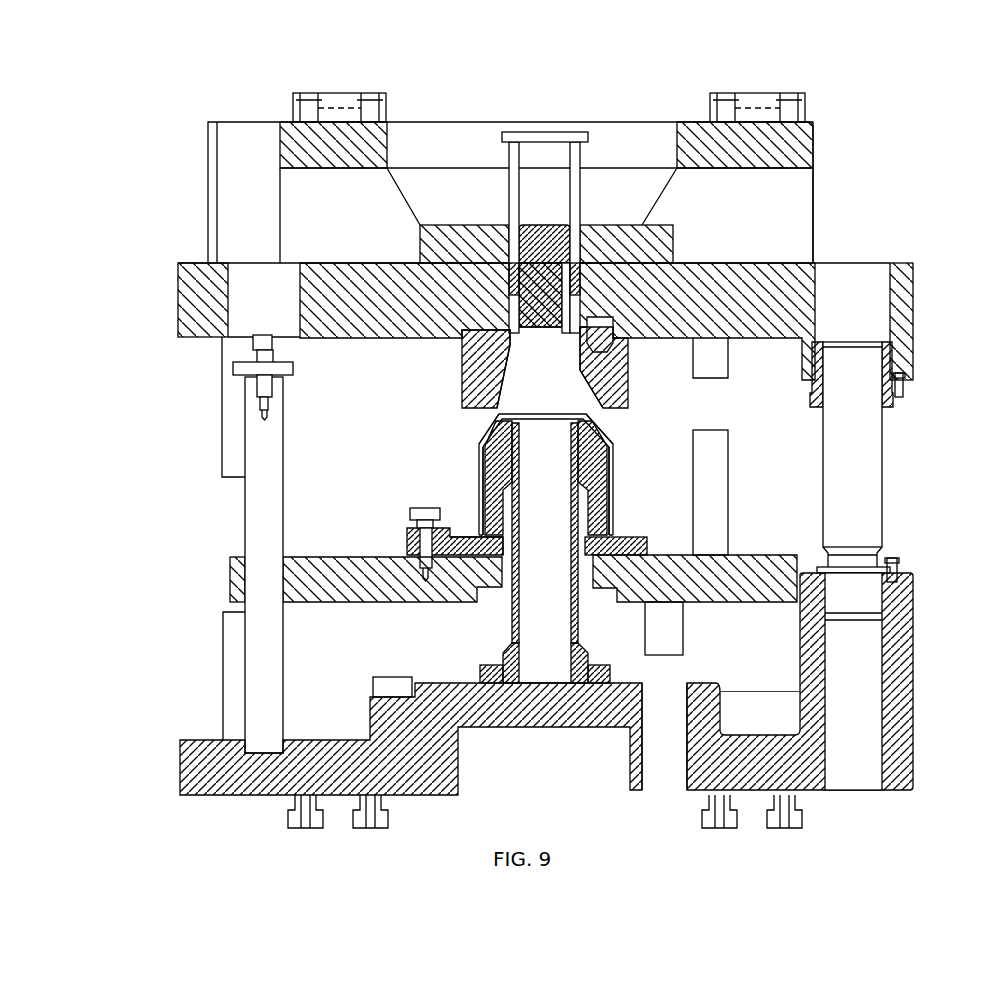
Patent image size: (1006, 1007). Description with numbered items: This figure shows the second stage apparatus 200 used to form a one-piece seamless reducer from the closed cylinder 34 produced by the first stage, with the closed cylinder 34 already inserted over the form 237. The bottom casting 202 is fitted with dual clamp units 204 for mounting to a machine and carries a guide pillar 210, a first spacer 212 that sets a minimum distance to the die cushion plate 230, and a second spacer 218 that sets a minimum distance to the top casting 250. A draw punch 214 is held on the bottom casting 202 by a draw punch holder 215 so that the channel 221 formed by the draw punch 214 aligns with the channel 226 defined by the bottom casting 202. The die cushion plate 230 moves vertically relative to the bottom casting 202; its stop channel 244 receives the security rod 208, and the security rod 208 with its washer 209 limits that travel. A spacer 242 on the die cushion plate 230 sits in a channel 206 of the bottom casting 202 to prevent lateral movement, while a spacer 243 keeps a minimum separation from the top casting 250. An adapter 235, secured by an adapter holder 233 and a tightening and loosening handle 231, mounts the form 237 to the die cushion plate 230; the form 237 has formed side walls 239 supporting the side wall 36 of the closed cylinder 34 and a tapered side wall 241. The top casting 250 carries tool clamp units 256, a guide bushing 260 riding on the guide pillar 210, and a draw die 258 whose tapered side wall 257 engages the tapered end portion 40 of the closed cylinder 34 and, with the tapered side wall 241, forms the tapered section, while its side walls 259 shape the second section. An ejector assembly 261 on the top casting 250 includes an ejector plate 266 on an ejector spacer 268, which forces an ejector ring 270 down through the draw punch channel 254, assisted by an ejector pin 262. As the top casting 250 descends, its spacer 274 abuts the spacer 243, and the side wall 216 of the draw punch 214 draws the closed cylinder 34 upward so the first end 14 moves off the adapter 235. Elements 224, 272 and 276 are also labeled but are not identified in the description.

The first end 14 is at (453, 553).
The closed cylinder 34 is at (632, 430).
The side wall 36 is at (480, 503).
The tapered end portion 40 is at (480, 433).
The second stage apparatus 200 is at (906, 436).
The bottom casting 202 is at (915, 718).
The dual clamp units 204 is at (286, 817).
The channel 206 is at (663, 780).
The security rod 208 is at (245, 516).
The washer 209 is at (234, 368).
The guide pillar 210 is at (885, 494).
The first spacer 212 is at (373, 678).
The draw punch 214 is at (511, 626).
The draw punch holder 215 is at (612, 675).
The side wall 216 is at (578, 612).
The second spacer 218 is at (223, 680).
The channel 221 is at (532, 595).
The liner 224 is at (497, 412).
The channel 226 is at (516, 727).
The die cushion plate 230 is at (777, 548).
The tightening and loosening handle 231 is at (415, 508).
The adapter holder 233 is at (407, 533).
The adapter 235 is at (613, 532).
The form 237 is at (476, 477).
The formed side walls 239 is at (603, 470).
The tapered side wall 241 is at (600, 452).
The spacer 242 is at (683, 626).
The spacer 243 is at (728, 445).
The stop channel 244 is at (285, 576).
The top casting 250 is at (915, 300).
The draw punch channel 254 is at (583, 305).
The tool clamp units 256 is at (364, 93).
The tapered side wall 257 is at (505, 377).
The draw die 258 is at (462, 353).
The side walls 259 is at (517, 340).
The guide bushing 260 is at (892, 357).
The ejector assembly 261 is at (538, 108).
The ejector pin 262 is at (580, 277).
The ejector plate 266 is at (567, 131).
The ejector spacer 268 is at (580, 158).
The ejector ring 270 is at (510, 282).
The block 272 is at (503, 250).
The spacer 274 is at (728, 362).
The bracket 276 is at (222, 455).